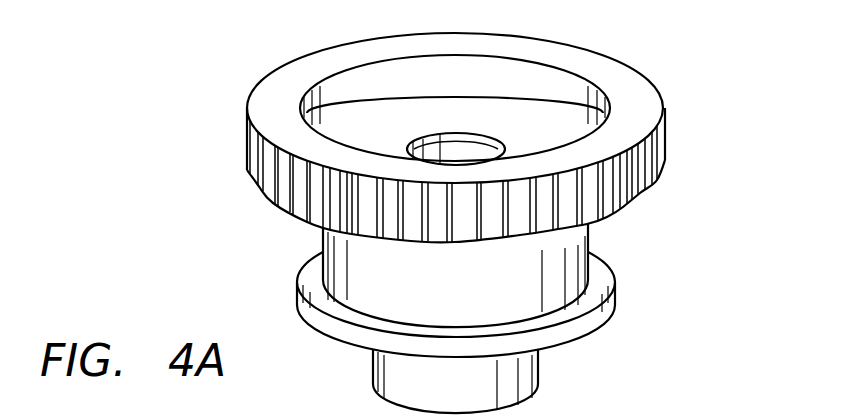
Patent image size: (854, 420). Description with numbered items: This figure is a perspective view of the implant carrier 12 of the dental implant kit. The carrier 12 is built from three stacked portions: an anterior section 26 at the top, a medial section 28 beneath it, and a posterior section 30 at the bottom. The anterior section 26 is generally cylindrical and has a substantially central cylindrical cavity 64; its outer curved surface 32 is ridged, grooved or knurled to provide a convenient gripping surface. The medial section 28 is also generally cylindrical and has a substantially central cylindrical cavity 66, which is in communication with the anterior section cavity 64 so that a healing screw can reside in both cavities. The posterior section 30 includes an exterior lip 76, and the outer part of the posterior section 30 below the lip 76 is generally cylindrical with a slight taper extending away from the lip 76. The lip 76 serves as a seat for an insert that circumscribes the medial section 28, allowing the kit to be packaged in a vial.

The implant carrier 12 is at (182, 264).
The anterior section 26 is at (248, 145).
The medial section 28 is at (330, 252).
The posterior section 30 is at (507, 372).
The outer curved surface 32 is at (640, 177).
The central cylindrical cavity 64 is at (413, 110).
The central cylindrical cavity 66 is at (457, 152).
The exterior lip 76 is at (612, 300).